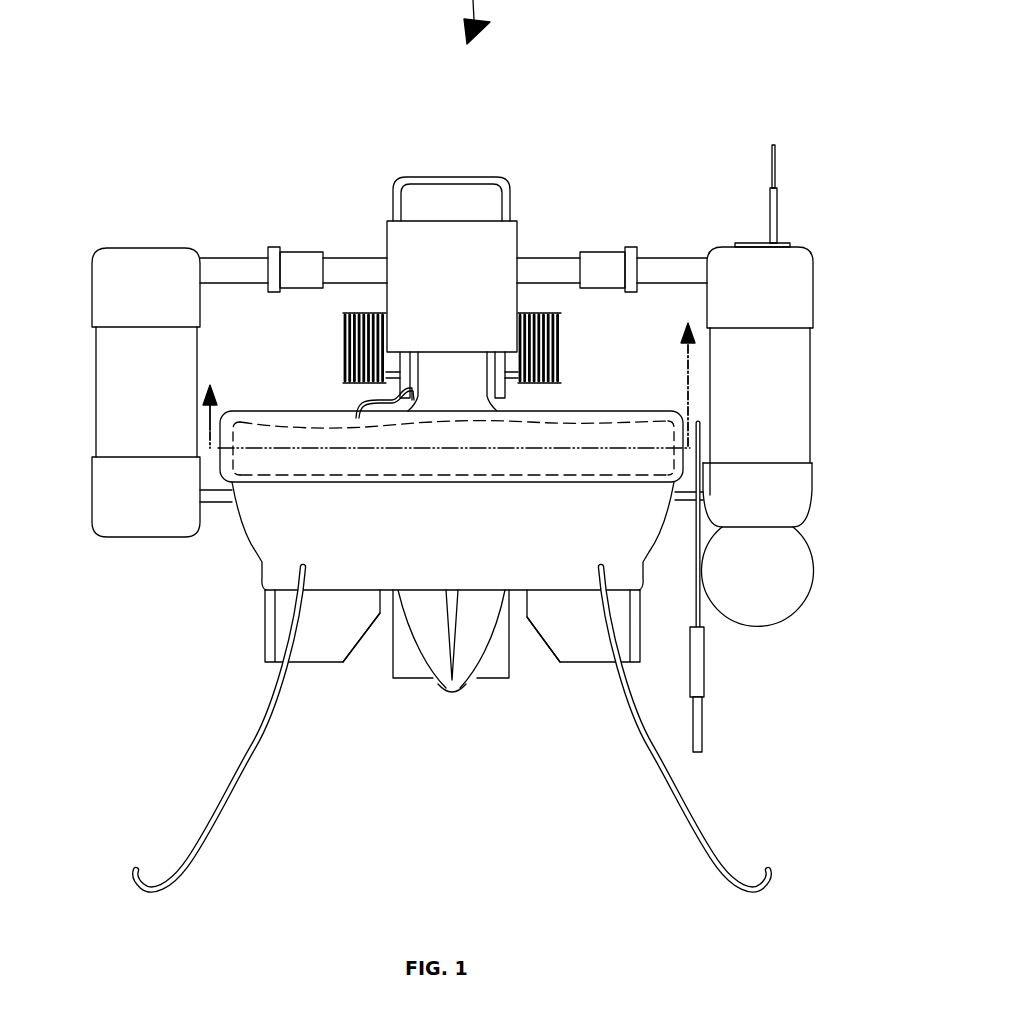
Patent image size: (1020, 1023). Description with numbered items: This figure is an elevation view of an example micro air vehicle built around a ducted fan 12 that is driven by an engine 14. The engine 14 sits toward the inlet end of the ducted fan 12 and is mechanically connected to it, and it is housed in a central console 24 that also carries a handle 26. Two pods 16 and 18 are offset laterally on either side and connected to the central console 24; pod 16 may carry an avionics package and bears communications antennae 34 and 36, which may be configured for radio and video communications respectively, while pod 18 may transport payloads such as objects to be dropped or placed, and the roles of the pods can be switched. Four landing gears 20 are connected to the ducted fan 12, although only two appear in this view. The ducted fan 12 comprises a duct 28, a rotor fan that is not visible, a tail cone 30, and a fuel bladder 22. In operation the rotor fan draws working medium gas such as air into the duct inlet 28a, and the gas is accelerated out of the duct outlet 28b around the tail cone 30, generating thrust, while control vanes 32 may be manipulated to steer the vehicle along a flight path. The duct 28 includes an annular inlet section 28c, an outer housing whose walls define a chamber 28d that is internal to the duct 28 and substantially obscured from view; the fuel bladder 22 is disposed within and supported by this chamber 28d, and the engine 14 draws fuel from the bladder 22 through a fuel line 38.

The ducted fan 12 is at (232, 536).
The engine 14 is at (318, 340).
The pod 16 is at (810, 250).
The pod 18 is at (162, 246).
The landing gear 20 is at (257, 748).
The fuel bladder 22 is at (563, 418).
The central console 24 is at (413, 267).
The handle 26 is at (488, 178).
The duct 28 is at (277, 542).
The duct inlet 28a is at (562, 398).
The duct outlet 28b is at (386, 604).
The annular inlet section 28c is at (604, 410).
The chamber 28d is at (318, 415).
The tail cone 30 is at (455, 694).
The control vanes 32 is at (446, 688).
The communications antenna 34 is at (776, 162).
The communications antenna 36 is at (702, 720).
The fuel line 38 is at (357, 405).